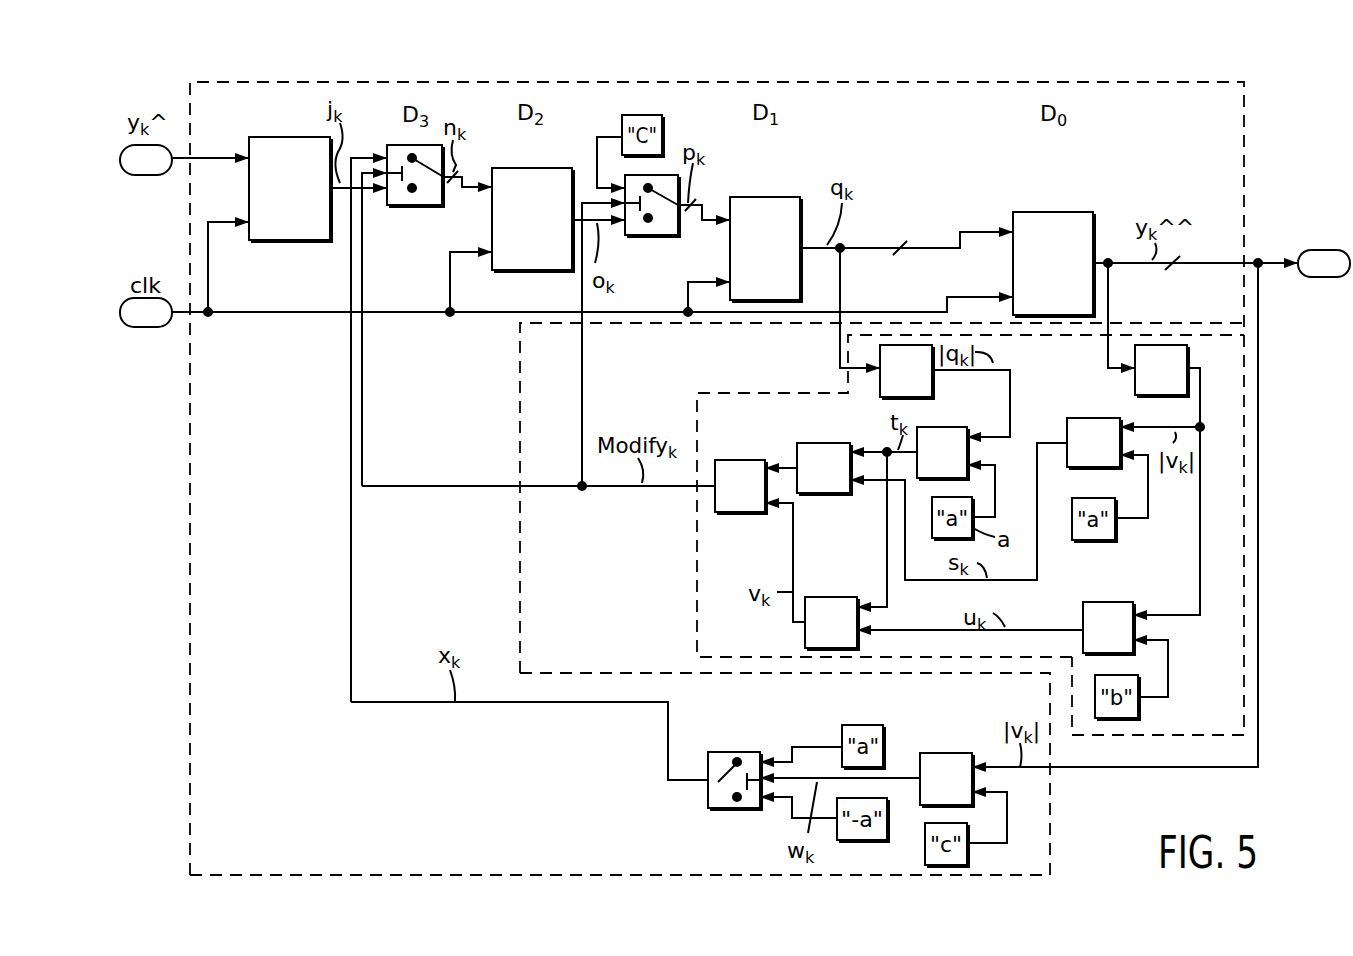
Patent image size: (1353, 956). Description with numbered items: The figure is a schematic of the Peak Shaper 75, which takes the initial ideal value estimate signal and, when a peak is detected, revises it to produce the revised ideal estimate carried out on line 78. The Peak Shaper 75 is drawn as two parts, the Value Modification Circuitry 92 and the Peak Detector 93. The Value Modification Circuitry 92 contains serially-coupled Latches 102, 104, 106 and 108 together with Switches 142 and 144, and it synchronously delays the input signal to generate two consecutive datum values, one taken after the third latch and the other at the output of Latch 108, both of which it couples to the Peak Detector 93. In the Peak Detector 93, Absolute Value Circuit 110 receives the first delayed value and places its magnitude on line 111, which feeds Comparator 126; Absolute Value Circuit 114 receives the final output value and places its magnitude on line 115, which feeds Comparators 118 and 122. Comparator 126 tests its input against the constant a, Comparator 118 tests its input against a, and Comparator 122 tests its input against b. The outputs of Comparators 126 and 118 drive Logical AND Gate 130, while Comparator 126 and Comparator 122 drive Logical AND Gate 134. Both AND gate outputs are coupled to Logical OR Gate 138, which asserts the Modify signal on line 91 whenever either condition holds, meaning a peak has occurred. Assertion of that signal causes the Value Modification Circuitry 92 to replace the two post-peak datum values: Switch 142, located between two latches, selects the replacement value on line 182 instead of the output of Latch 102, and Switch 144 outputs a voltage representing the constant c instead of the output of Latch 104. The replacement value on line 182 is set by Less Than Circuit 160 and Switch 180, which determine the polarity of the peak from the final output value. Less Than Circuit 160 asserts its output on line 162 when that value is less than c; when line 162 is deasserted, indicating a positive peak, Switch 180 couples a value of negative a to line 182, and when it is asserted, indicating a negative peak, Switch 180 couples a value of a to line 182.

The Peak Shaper 75 is at (187, 65).
The line 78 is at (1249, 255).
The line 91 is at (613, 490).
The Value Modification Circuitry 92 is at (261, 857).
The Peak Detector 93 is at (697, 580).
The Latch 102 is at (288, 240).
The Latch 104 is at (530, 270).
The Latch 106 is at (775, 197).
The Latch 108 is at (1053, 212).
The Absolute Value Circuit 110 is at (933, 381).
The line 111 is at (1000, 368).
The Absolute Value Circuit 114 is at (1135, 388).
The line 115 is at (1223, 397).
The Comparator 118 is at (1083, 417).
The Comparator 122 is at (1122, 602).
The Comparator 126 is at (932, 427).
The Logical AND Gate 130 is at (822, 442).
The Logical AND Gate 134 is at (833, 597).
The Logical OR Gate 138 is at (740, 513).
The Switch 142 is at (410, 205).
The Switch 144 is at (653, 235).
The Less Than Circuit 160 is at (962, 753).
The line 162 is at (898, 778).
The Switch 180 is at (735, 812).
The line 182 is at (482, 705).